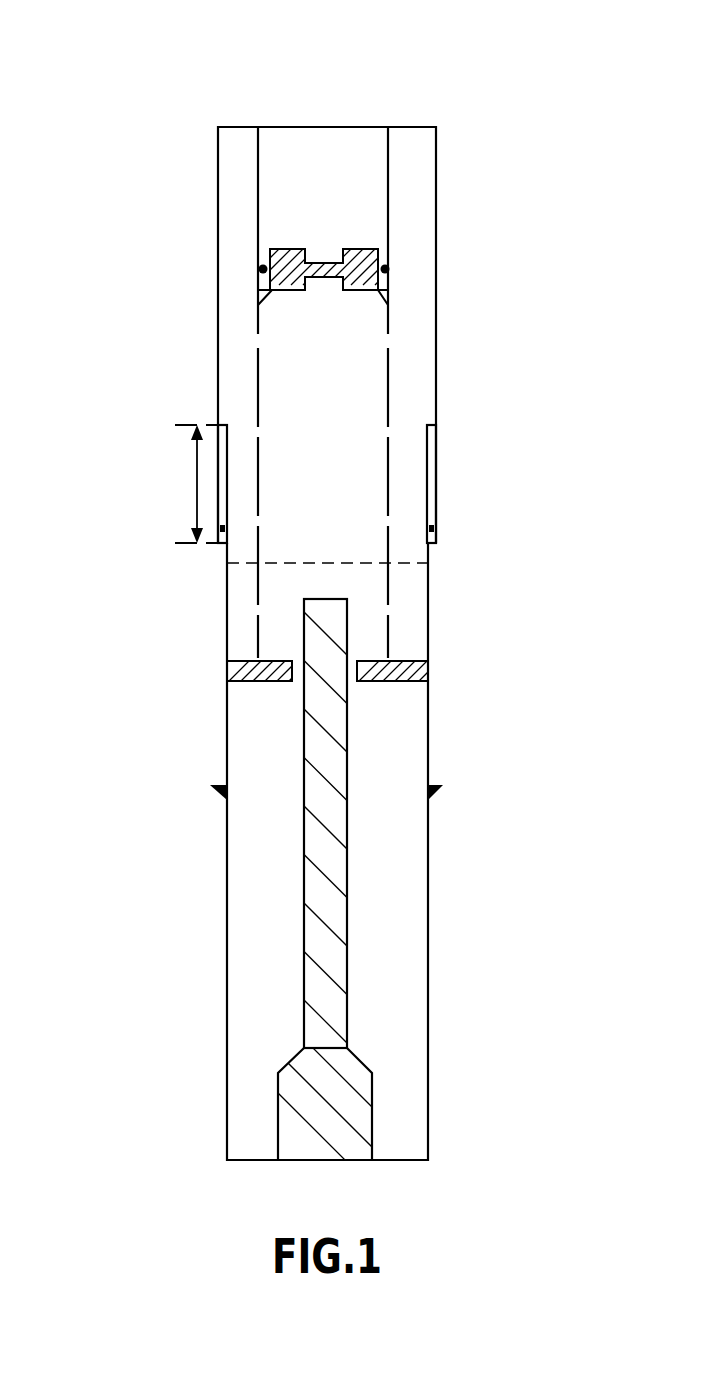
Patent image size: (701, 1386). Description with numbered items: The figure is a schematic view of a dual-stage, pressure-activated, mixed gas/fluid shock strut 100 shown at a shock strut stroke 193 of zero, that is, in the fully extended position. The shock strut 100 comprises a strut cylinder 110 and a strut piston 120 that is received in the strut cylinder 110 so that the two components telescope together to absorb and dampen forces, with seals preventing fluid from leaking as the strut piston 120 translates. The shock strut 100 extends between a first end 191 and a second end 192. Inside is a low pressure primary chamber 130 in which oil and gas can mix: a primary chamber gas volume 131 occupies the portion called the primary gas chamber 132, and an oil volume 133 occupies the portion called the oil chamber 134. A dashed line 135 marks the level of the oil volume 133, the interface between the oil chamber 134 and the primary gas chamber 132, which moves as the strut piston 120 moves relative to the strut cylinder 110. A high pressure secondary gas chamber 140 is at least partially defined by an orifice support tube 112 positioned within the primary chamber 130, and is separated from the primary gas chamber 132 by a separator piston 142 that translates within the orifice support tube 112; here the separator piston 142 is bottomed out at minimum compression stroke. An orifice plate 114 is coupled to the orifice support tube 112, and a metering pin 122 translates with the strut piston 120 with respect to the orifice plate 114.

The shock strut 100 is at (116, 94).
The strut cylinder 110 is at (218, 330).
The orifice support tube 112 is at (392, 210).
The orifice plate 114 is at (420, 665).
The strut piston 120 is at (227, 940).
The metering pin 122 is at (304, 883).
The primary chamber 130 is at (412, 472).
The primary chamber gas volume 131 is at (244, 408).
The primary gas chamber 132 is at (420, 330).
The oil volume 133 is at (245, 735).
The oil chamber 134 is at (403, 735).
The dashed line 135 is at (357, 566).
The secondary gas chamber 140 is at (358, 175).
The separator piston 142 is at (382, 258).
The first end 191 is at (254, 1186).
The second end 192 is at (399, 87).
The shock strut stroke 193 is at (197, 480).